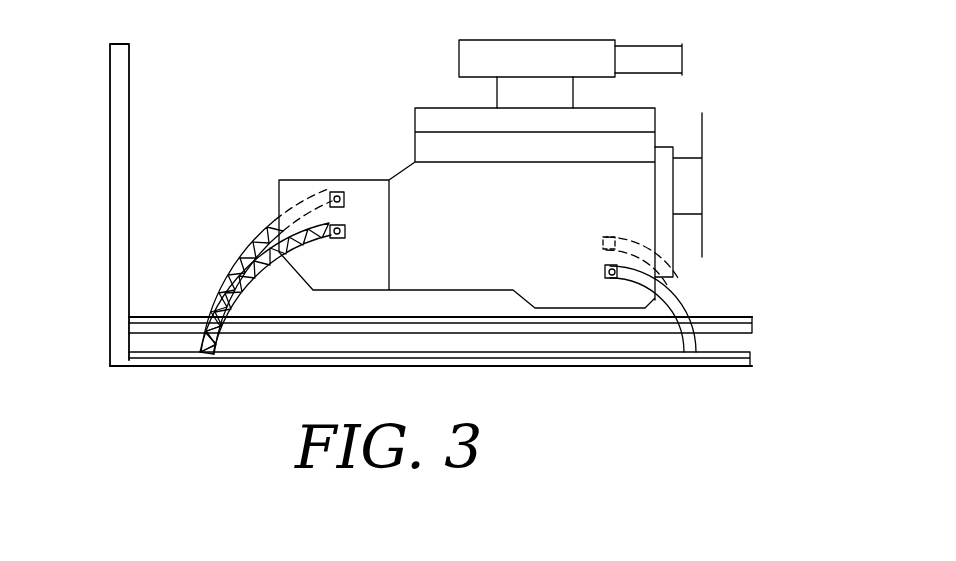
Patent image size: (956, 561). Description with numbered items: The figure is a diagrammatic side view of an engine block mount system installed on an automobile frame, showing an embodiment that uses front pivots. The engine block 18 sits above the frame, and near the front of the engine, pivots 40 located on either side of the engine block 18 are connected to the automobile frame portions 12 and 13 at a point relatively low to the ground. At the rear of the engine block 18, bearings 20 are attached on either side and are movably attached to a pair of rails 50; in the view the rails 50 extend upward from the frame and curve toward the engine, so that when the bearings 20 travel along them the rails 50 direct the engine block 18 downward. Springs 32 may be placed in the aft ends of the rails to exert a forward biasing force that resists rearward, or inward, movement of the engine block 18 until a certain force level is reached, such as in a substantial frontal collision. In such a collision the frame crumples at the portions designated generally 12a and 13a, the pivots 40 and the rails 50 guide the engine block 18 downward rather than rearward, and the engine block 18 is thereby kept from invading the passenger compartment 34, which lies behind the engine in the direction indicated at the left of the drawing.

The passenger compartment 34 is at (82, 45).
The automobile frame portion 12 is at (747, 350).
The frame crumple portion 12a is at (168, 366).
The automobile frame portion 13 is at (730, 318).
The frame crumple portion 13a is at (158, 316).
The engine block 18 is at (408, 155).
The bearings 20 is at (345, 198).
The springs 32 is at (270, 241).
The pivots 40 is at (603, 272).
The rails 50 is at (240, 240).